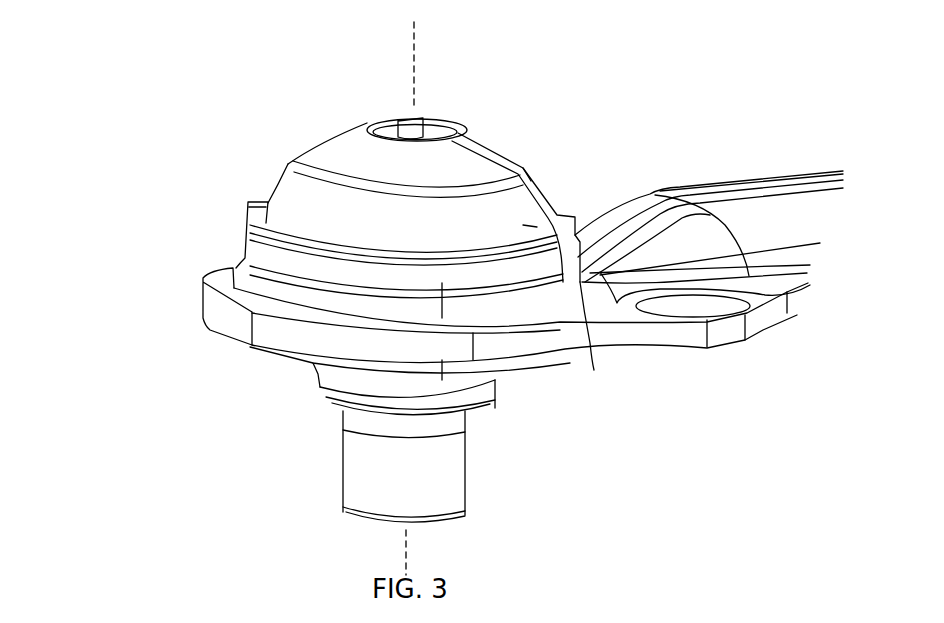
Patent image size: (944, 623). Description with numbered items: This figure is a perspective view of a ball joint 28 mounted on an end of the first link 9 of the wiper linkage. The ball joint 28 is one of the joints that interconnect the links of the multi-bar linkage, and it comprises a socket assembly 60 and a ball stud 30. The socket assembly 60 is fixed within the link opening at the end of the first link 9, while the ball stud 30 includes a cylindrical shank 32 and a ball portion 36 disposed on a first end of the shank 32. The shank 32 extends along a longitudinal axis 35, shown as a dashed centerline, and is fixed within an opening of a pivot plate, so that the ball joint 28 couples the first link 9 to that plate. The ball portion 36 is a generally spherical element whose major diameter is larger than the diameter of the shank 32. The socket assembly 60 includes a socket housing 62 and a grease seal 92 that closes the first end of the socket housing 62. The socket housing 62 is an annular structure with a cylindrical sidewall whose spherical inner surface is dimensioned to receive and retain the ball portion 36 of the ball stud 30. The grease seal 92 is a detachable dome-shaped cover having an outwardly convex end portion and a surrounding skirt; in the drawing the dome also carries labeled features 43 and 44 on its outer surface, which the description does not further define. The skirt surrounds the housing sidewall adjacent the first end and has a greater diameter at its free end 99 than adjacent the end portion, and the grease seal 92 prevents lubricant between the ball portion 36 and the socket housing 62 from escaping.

The ball joint 28 is at (207, 33).
The longitudinal axis 35 is at (415, 72).
The rib of dust boot 43 is at (493, 148).
The flat of dust boot 44 is at (523, 227).
The first link 9 is at (753, 186).
The socket assembly 60 is at (113, 152).
The grease seal 92 is at (246, 239).
The socket housing 62 is at (232, 272).
The ball stud 30 is at (316, 392).
The ball portion 36 is at (410, 397).
The shank 32 is at (345, 475).
The free end of the skirt 99 is at (594, 370).